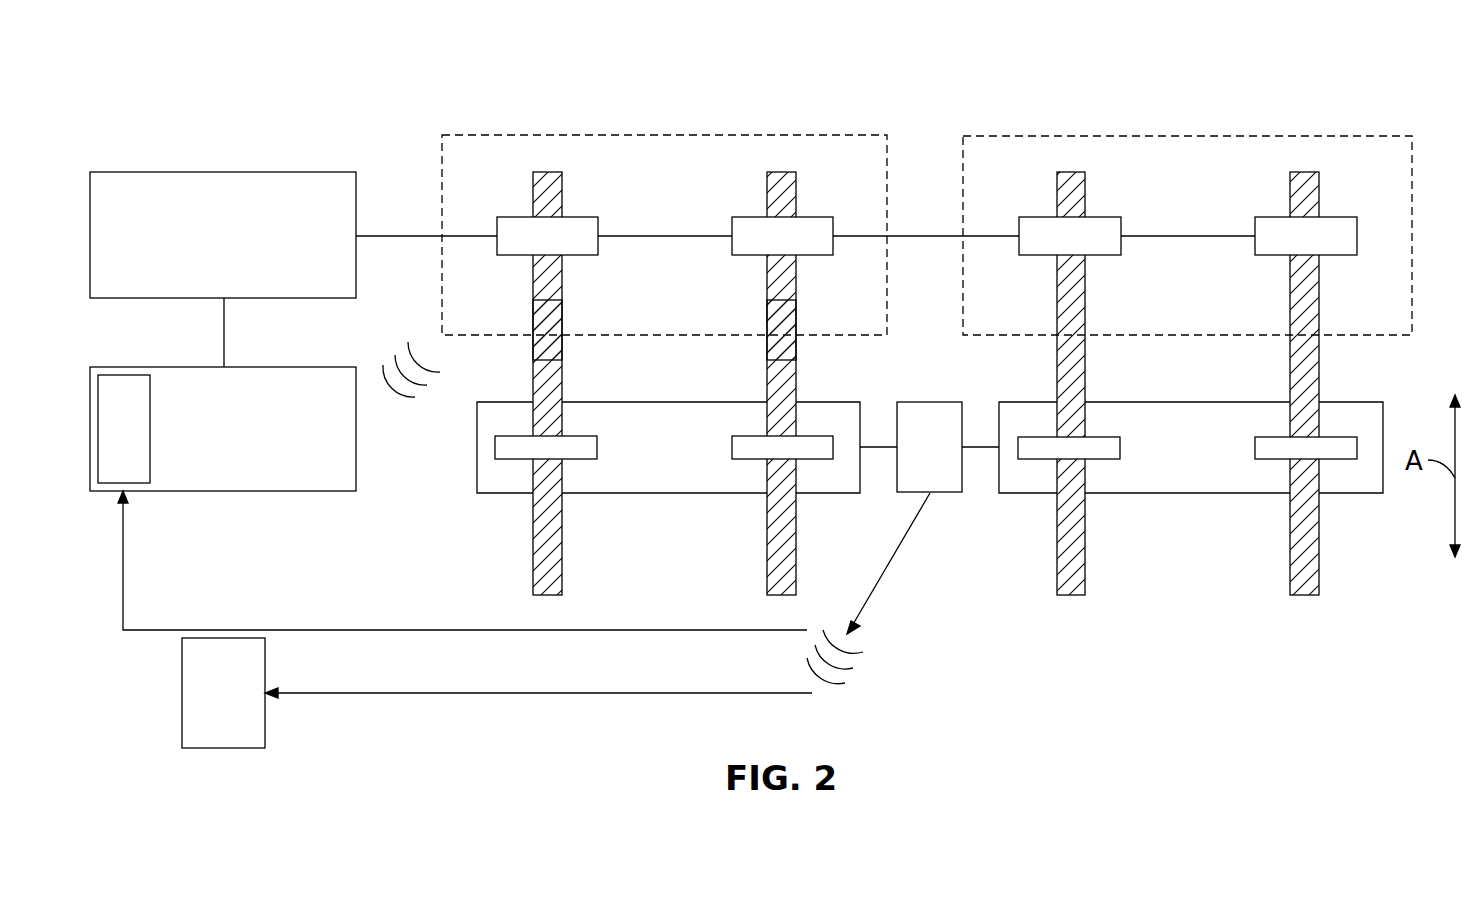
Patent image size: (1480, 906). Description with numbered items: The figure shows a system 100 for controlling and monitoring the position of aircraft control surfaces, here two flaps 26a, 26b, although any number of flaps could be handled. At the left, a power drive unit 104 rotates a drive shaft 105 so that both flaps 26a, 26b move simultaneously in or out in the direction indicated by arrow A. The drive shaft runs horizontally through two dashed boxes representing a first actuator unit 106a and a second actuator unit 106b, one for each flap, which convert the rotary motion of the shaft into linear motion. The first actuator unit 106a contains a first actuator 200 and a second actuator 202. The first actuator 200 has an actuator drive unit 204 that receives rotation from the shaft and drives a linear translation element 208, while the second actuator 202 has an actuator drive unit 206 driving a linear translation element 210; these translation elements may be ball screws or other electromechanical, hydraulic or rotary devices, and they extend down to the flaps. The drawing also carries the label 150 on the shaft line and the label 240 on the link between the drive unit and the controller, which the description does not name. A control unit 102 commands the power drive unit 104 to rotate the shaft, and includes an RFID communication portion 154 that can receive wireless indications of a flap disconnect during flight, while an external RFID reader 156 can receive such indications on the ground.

The system 100 is at (443, 66).
The control unit 102 is at (288, 493).
The power drive unit 104 is at (158, 170).
The drive shaft 105 is at (385, 233).
The first actuator unit 106a is at (677, 135).
The second actuator unit 106b is at (1185, 135).
The drive shaft 150 is at (360, 121).
The RFID communication portion 154 is at (125, 375).
The external RFID reader 156 is at (182, 693).
The first actuator 200 is at (580, 200).
The second actuator 202 is at (798, 200).
The actuator drive unit 204 is at (598, 250).
The actuator drive unit 206 is at (805, 247).
The linear translation element 208 is at (562, 325).
The linear translation element 210 is at (796, 325).
The connection 240 is at (227, 342).
The flap 26a is at (668, 493).
The flap 26b is at (1192, 493).